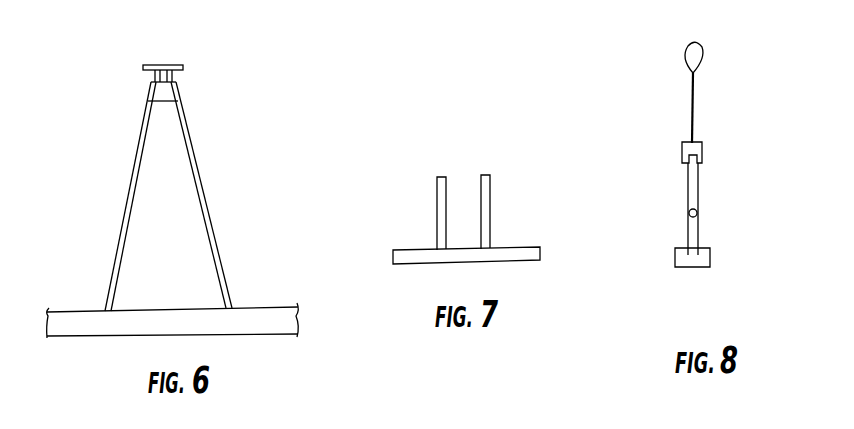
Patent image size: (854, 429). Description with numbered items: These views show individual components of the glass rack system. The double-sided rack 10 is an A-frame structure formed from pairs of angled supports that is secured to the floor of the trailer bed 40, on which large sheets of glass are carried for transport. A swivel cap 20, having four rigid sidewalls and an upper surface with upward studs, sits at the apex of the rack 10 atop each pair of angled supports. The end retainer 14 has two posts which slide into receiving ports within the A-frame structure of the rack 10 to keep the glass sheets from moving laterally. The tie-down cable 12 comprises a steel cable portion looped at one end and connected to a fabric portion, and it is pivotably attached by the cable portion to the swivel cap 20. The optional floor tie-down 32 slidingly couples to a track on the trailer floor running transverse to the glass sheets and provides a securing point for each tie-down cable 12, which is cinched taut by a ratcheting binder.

In FIG. 6, the double-sided rack 10 is at (240, 213).
In FIG. 6, the swivel cap 20 is at (165, 92).
In FIG. 6, the trailer bed 40 is at (288, 322).
In FIG. 7, the end retainer 14 is at (537, 253).
In FIG. 8, the tie-down cable 12 is at (695, 135).
In FIG. 8, the floor tie-down 32 is at (695, 265).